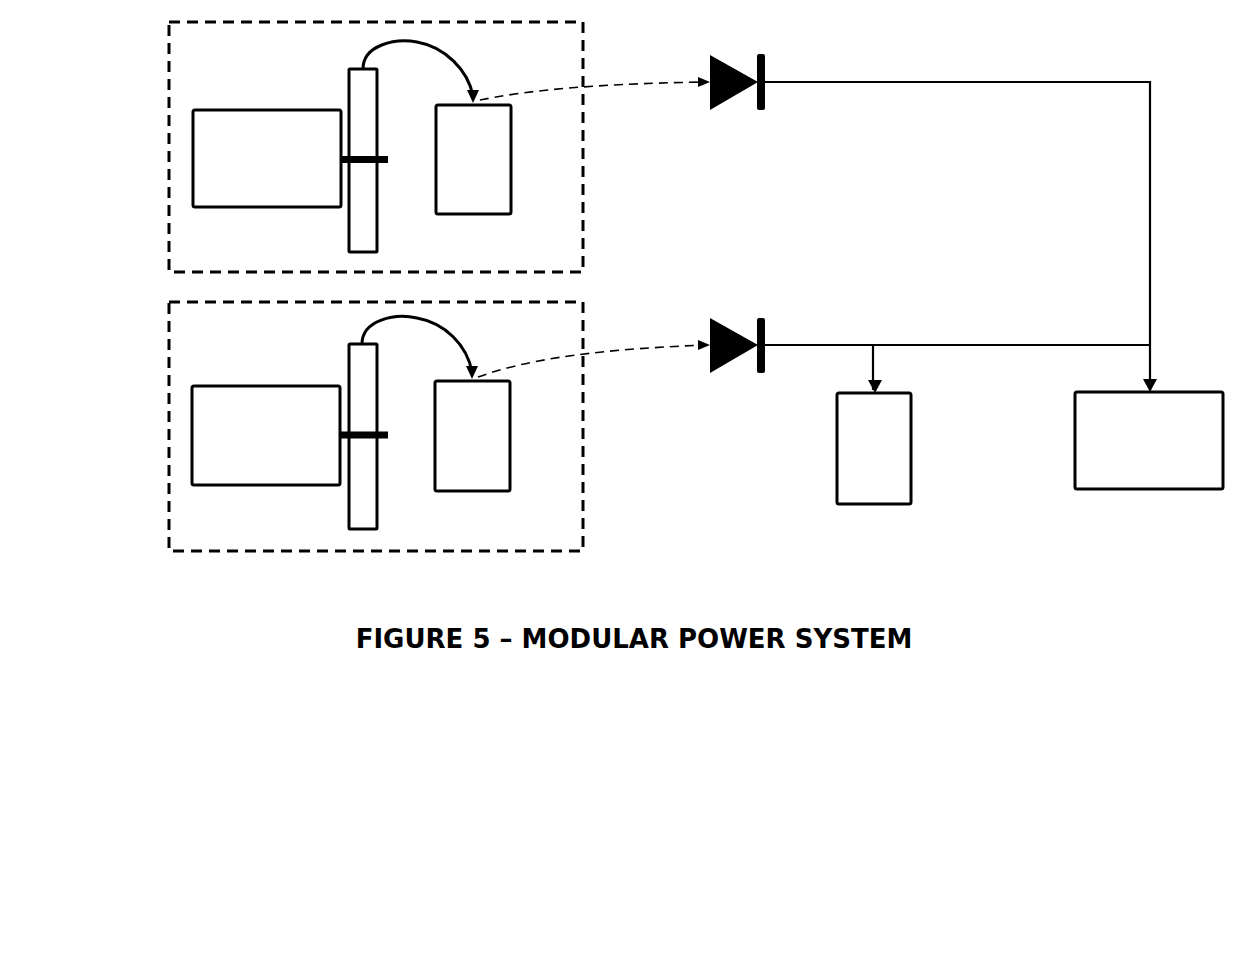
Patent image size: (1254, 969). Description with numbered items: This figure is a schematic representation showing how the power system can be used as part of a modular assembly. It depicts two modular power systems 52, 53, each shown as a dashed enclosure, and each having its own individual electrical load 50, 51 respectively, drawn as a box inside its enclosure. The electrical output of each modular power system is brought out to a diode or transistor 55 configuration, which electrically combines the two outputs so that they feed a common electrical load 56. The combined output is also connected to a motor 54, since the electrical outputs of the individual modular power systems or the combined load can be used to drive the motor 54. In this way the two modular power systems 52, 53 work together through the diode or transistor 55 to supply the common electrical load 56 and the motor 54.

The electrical load 50 is at (511, 160).
The electrical load 51 is at (510, 437).
The modular power system 52 is at (411, 147).
The modular power system 53 is at (416, 426).
The motor 54 is at (1075, 442).
The diode or transistor 55 is at (737, 100).
The common electrical load 56 is at (837, 449).